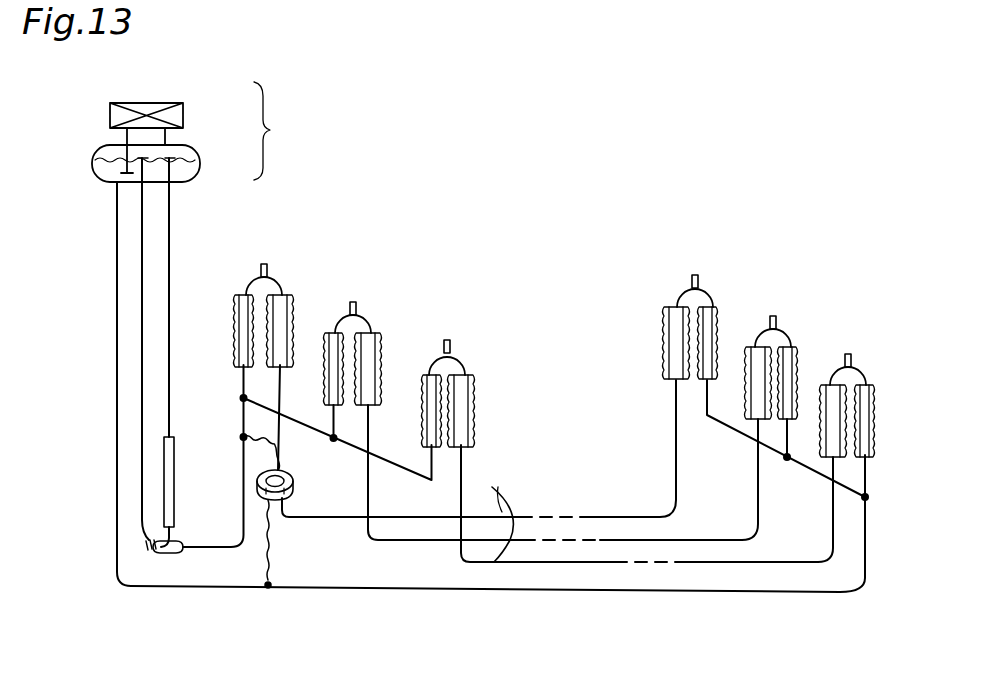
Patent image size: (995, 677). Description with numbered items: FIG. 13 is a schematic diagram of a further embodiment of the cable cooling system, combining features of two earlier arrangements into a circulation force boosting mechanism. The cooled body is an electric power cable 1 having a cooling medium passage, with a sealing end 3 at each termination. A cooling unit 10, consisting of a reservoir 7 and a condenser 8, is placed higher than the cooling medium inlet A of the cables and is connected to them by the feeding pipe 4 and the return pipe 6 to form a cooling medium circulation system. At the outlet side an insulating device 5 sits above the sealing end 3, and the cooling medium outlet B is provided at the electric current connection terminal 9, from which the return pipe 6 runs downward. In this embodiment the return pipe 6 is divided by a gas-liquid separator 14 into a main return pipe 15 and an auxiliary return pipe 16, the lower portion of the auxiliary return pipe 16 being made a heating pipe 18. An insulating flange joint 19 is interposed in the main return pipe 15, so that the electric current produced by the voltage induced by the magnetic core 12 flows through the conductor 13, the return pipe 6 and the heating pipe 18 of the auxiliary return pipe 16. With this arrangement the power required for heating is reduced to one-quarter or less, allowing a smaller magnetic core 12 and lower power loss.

The electric power cable 1 is at (494, 518).
The sealing end 3 is at (308, 300).
The feeding pipe 4 is at (450, 590).
The insulating device 5 is at (235, 335).
The return pipe 6 is at (233, 544).
The reservoir 7 is at (200, 150).
The condenser 8 is at (183, 112).
The electric current connection terminal 9 is at (266, 264).
The cooling unit 10 is at (202, 132).
The magnetic core 12 is at (293, 487).
The conductor 13 is at (271, 540).
The gas-liquid separator 14 is at (172, 553).
The main return pipe 15 is at (143, 290).
The auxiliary return pipe 16 is at (170, 245).
The heating pipe 18 is at (174, 456).
The insulating flange joint 19 is at (150, 556).
The cooling medium inlet A is at (707, 299).
The cooling medium outlet B is at (277, 284).